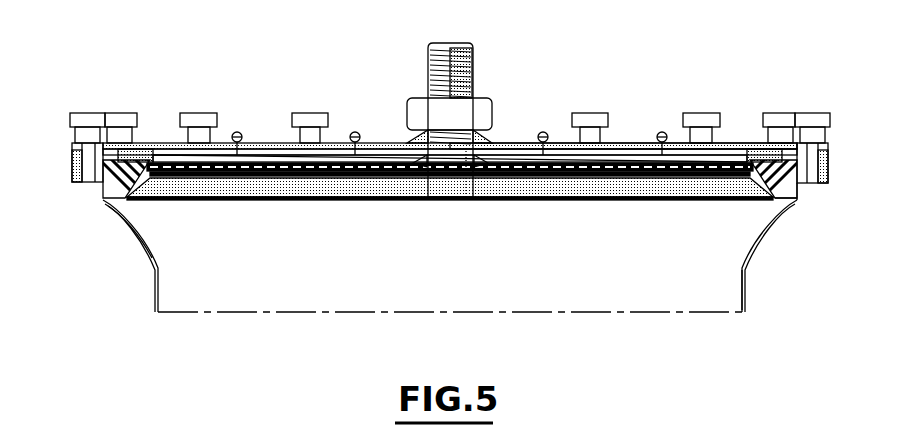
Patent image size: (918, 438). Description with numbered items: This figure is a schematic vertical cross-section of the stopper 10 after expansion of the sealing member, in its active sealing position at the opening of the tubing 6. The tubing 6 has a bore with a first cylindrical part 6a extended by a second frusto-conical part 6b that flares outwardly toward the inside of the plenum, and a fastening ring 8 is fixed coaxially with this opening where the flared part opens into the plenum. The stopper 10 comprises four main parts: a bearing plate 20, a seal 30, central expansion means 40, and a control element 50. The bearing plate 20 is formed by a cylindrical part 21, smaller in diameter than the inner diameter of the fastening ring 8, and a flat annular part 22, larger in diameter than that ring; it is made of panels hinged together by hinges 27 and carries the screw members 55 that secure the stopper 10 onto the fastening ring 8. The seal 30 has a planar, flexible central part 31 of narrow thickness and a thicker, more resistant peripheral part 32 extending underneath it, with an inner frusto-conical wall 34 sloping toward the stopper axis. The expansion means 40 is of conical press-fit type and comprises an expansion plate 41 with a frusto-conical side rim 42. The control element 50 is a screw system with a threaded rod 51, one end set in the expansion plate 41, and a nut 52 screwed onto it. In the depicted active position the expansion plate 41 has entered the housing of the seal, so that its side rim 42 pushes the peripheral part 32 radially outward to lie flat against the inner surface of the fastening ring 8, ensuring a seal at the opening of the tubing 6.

The stopper 10 is at (344, 94).
The tubing 6 is at (152, 288).
The first cylindrical part 6a is at (743, 296).
The second frusto-conical part 6b is at (112, 212).
The fastening ring 8 is at (72, 166).
The bearing plate 20 is at (163, 138).
The cylindrical part 21 is at (602, 141).
The flat annular part 22 is at (72, 145).
The hinges 27 is at (235, 131).
The seal 30 is at (281, 155).
The central part 31 is at (549, 178).
The peripheral part 32 is at (103, 199).
The inner frusto-conical wall 34 is at (786, 200).
The expansion means 40 is at (320, 212).
The expansion plate 41 is at (497, 201).
The frusto-conical side rim 42 is at (773, 210).
The control element 50 is at (455, 103).
The threaded rod 51 is at (435, 60).
The nut 52 is at (410, 110).
The screw members 55 is at (88, 112).